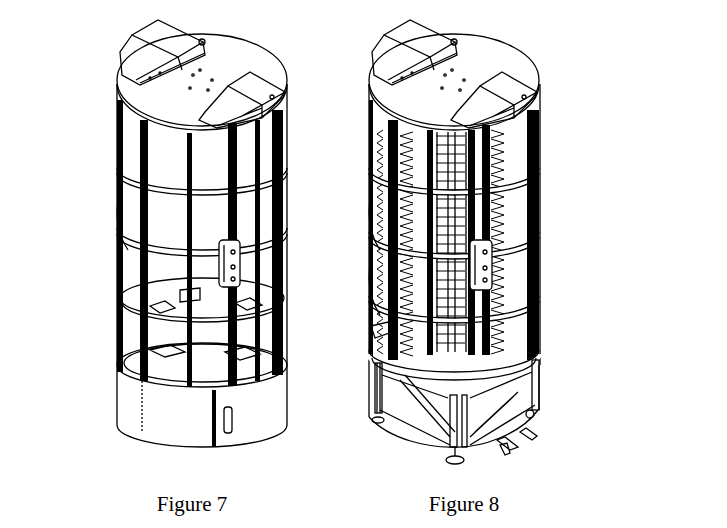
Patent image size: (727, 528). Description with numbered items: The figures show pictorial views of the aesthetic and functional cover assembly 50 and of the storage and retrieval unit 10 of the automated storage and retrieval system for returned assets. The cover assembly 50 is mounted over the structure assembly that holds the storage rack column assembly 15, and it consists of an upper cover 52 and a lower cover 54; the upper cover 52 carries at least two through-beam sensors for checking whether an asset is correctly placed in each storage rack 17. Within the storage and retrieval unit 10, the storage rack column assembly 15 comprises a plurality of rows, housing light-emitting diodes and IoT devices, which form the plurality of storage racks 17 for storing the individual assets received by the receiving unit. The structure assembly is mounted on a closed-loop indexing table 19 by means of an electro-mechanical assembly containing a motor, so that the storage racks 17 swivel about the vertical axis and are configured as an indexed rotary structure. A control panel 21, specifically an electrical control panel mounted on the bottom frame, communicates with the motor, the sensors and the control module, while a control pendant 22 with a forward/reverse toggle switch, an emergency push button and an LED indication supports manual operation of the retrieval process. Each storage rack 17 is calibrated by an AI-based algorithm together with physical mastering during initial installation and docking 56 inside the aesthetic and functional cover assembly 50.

In FIG. 8, the storage and retrieval unit 10 is at (560, 49).
In FIG. 8, the storage rack column assembly 15 is at (541, 157).
In FIG. 8, the storage rack 17 is at (541, 180).
In FIG. 8, the indexing table 19 is at (368, 330).
In FIG. 8, the control panel 21 is at (541, 378).
In FIG. 7, the control pendant 22 is at (243, 275).
In FIG. 8, the control pendant 22 is at (377, 273).
In FIG. 7, the aesthetic and functional cover assembly 50 is at (104, 43).
In FIG. 7, the upper cover 52 is at (119, 94).
In FIG. 8, the upper cover 52 is at (532, 102).
In FIG. 7, the lower cover 54 is at (263, 400).
In FIG. 8, the docking 56 is at (535, 413).